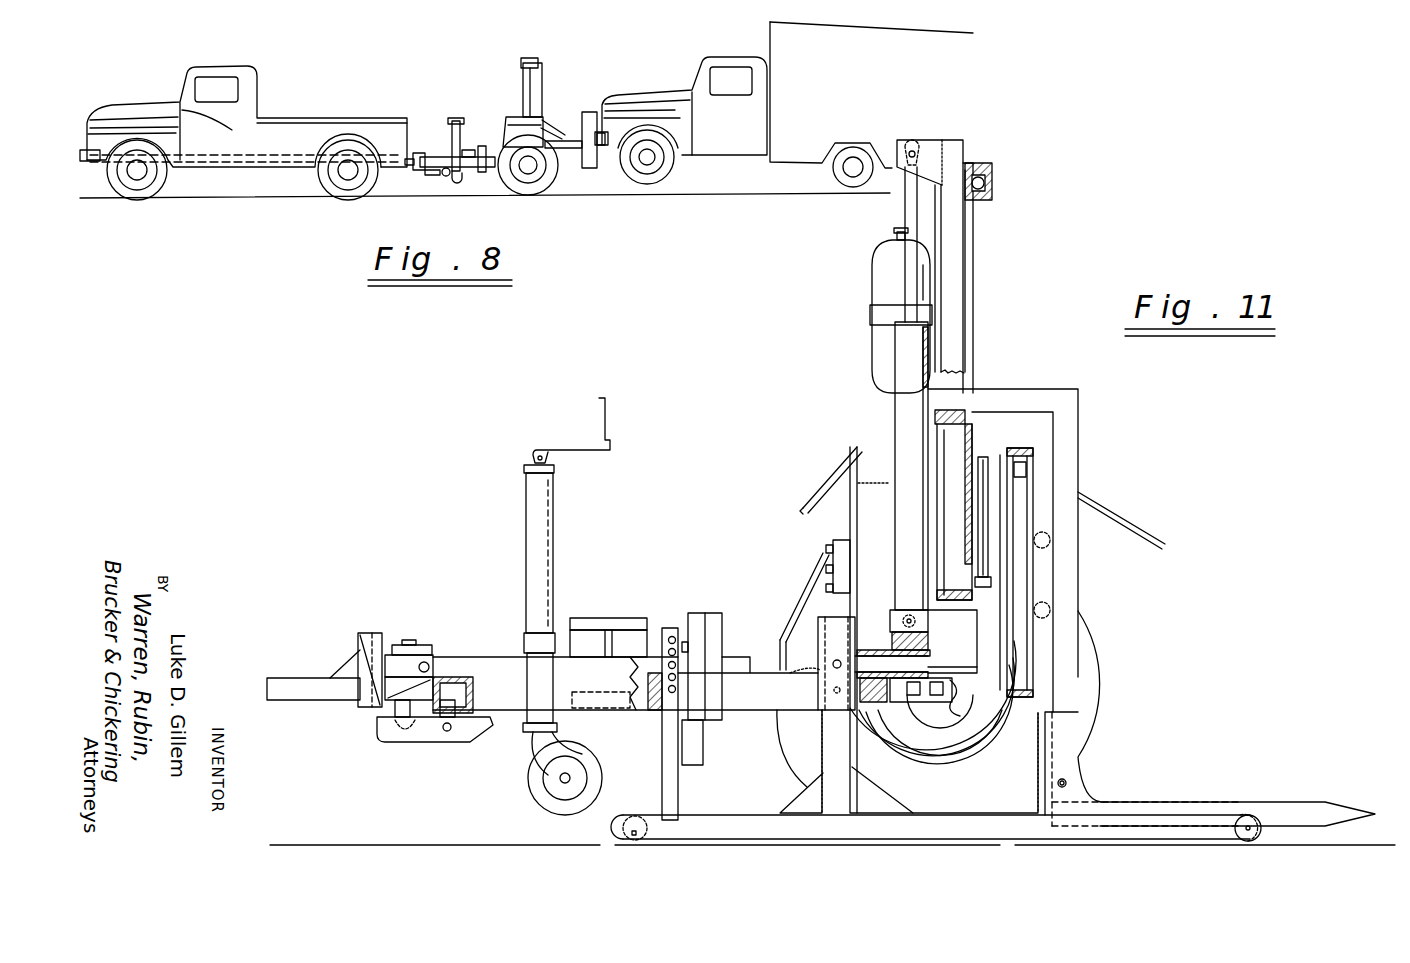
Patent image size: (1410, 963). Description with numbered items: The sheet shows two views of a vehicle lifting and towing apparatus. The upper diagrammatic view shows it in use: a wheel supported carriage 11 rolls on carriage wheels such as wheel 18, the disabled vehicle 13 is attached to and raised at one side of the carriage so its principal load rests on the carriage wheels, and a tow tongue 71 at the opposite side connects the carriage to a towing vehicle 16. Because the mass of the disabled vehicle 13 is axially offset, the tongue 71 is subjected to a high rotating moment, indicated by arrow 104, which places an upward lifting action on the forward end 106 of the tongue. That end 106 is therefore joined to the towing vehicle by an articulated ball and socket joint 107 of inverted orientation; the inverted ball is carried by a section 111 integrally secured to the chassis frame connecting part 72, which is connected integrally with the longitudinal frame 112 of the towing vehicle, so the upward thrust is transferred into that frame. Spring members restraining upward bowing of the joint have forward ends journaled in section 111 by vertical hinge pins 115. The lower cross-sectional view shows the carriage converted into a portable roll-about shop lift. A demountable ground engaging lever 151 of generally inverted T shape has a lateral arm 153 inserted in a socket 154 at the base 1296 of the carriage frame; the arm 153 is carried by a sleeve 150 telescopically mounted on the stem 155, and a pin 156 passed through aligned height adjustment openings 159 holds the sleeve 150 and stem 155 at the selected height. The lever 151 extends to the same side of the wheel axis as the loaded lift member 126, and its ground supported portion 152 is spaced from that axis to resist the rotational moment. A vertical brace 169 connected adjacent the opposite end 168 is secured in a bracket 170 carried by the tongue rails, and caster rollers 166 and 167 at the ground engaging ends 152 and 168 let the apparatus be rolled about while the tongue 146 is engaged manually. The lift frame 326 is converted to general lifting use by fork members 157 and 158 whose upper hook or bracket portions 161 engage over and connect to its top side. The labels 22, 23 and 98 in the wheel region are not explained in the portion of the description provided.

In FIG. 8, the carriage 11 is at (548, 108).
In FIG. 8, the disabled vehicle 13 is at (668, 84).
In FIG. 8, the towing vehicle 16 is at (137, 96).
In FIG. 11, the carriage wheel 18 is at (1099, 701).
In FIG. 11, the wheel hub 22 is at (867, 710).
In FIG. 11, the brake drum 23 is at (942, 698).
In FIG. 8, the tow tongue 71 is at (470, 176).
In FIG. 8, the chassis frame connecting part 72 is at (406, 182).
In FIG. 11, the wheel rim 98 is at (893, 733).
In FIG. 8, the arrow indicating rotating moment 104 is at (455, 140).
In FIG. 8, the forward end of tongue 106 is at (420, 182).
In FIG. 8, the articulated ball and socket joint 107 is at (444, 180).
In FIG. 8, the section 111 is at (428, 150).
In FIG. 8, the frame of towing vehicle 112 is at (392, 142).
In FIG. 11, the pin 115 is at (408, 645).
In FIG. 11, the lift cylinder 126 is at (1056, 494).
In FIG. 11, the tongue assembly 146 is at (393, 602).
In FIG. 11, the sleeve 150 is at (832, 676).
In FIG. 11, the ground engaging lever 151 is at (762, 808).
In FIG. 11, the ground supported portion 152 is at (1211, 822).
In FIG. 11, the lateral arm 153 is at (930, 660).
In FIG. 11, the socket 154 is at (833, 660).
In FIG. 11, the stem 155 is at (792, 742).
In FIG. 11, the pin 156 is at (800, 672).
In FIG. 11, the fork member 157 is at (1080, 426).
In FIG. 11, the fork member 158 is at (1121, 520).
In FIG. 11, the height adjustment openings 159 is at (820, 640).
In FIG. 11, the upper hook or bracket portion 161 is at (900, 413).
In FIG. 11, the caster wheel 166 is at (1245, 814).
In FIG. 11, the caster wheel 167 is at (623, 833).
In FIG. 11, the end of lever 168 is at (687, 830).
In FIG. 11, the vertical brace 169 is at (667, 735).
In FIG. 11, the bracket 170 is at (688, 690).
In FIG. 11, the bearing block 326 is at (965, 412).
In FIG. 11, the retainer 1296 is at (890, 640).